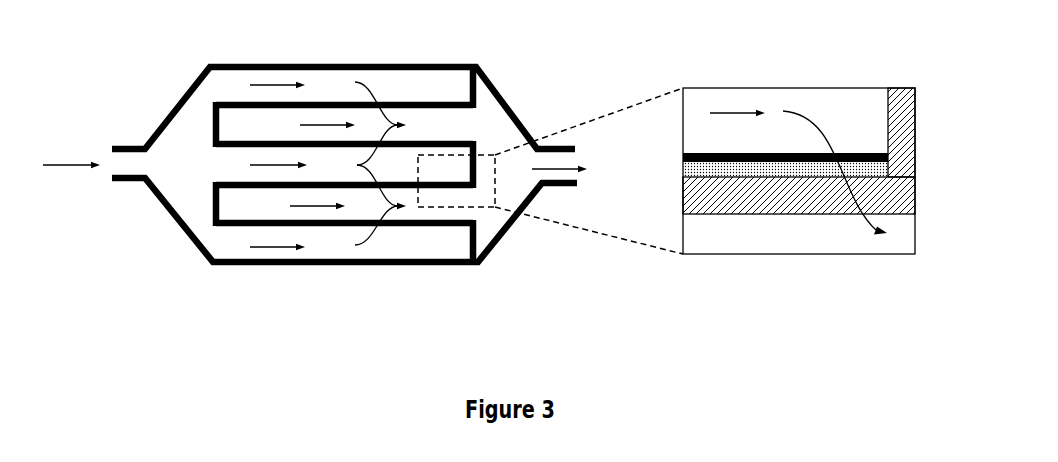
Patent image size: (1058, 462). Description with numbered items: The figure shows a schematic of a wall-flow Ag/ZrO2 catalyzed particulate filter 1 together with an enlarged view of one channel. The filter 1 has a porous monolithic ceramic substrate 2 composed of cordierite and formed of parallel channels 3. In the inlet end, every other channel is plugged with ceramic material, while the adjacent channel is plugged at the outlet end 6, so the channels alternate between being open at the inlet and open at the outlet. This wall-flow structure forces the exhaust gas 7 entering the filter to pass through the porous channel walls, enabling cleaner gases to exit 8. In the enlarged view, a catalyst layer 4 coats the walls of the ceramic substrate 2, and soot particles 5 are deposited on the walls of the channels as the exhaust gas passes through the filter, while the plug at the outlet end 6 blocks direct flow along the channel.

The Ag/ZrO2 catalyzed particulate filter 1 is at (344, 163).
The porous monolithic ceramic substrate 2 is at (915, 197).
The parallel channels 3 is at (237, 122).
The catalyst layer 4 is at (683, 169).
The soot particles 5 is at (683, 157).
The outlet end plug 6 is at (915, 132).
The exhaust gas 7 is at (112, 163).
The cleaner gas exit 8 is at (568, 170).